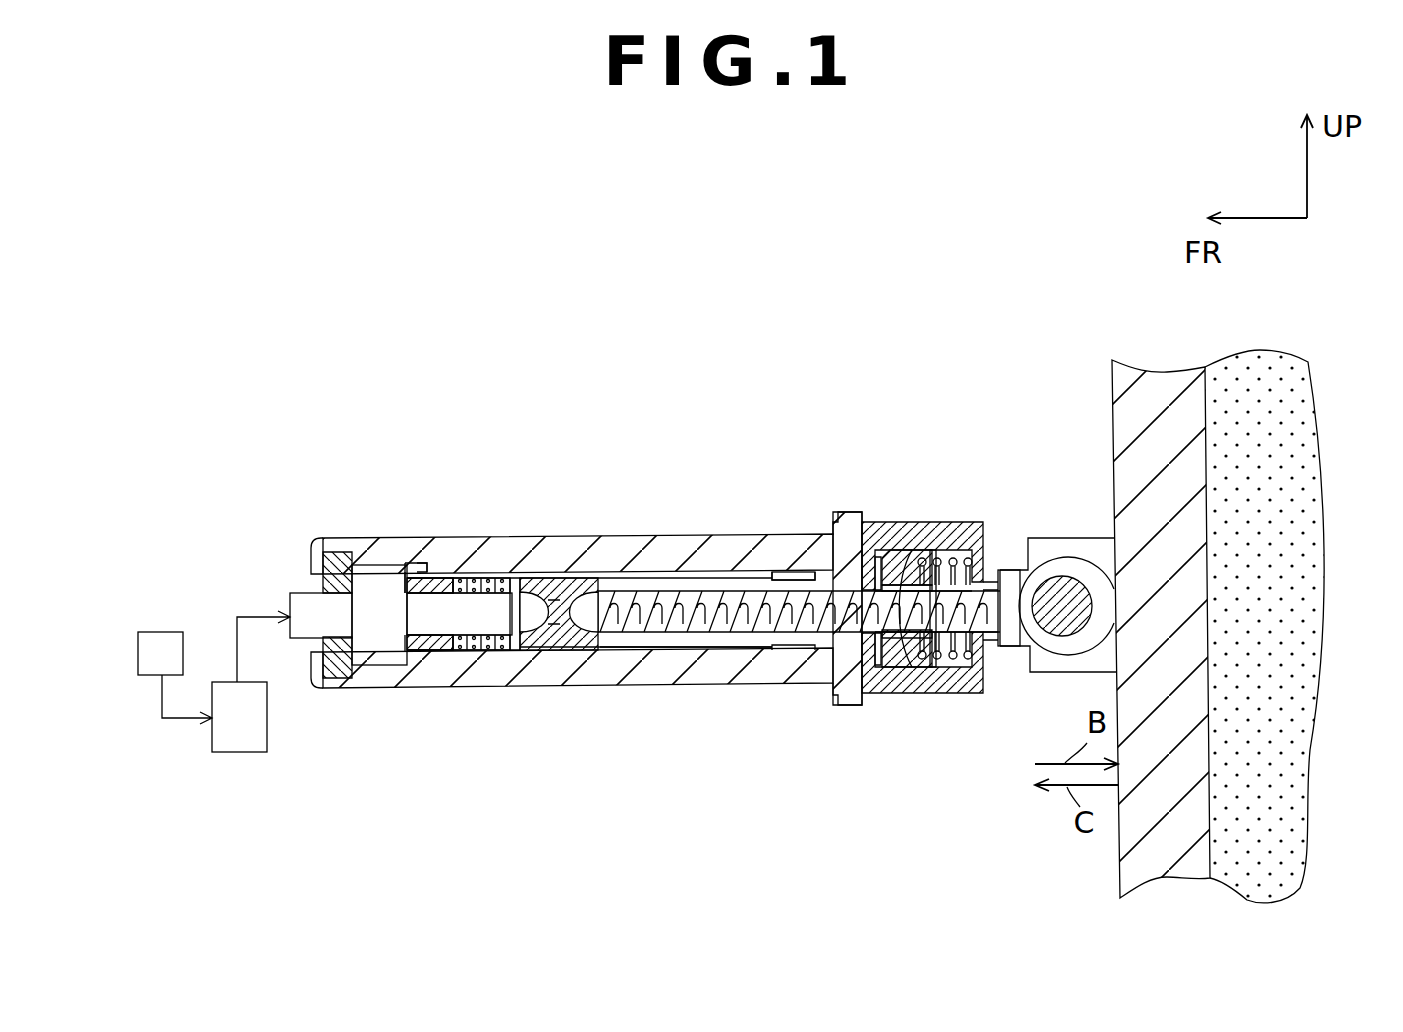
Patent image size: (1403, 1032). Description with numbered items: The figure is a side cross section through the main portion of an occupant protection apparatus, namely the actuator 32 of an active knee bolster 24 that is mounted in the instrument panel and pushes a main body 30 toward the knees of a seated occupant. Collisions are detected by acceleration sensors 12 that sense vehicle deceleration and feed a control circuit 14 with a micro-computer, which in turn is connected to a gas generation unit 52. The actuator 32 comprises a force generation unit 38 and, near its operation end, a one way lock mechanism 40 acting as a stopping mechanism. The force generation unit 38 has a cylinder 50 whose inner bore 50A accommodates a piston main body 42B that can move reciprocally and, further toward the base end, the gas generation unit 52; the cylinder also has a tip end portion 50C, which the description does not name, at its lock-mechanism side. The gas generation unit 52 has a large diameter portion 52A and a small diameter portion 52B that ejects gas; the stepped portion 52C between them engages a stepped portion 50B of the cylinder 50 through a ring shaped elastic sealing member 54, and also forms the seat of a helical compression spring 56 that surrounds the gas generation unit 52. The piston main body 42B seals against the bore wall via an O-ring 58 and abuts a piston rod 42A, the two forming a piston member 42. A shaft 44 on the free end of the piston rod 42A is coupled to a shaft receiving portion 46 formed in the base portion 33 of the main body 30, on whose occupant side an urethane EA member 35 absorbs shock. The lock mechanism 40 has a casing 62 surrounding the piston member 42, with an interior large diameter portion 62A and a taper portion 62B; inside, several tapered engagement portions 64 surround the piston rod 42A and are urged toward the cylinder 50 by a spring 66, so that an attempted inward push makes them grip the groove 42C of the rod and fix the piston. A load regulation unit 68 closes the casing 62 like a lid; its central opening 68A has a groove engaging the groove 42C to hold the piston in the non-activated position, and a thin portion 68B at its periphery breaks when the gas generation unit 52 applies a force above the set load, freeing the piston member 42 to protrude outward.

The acceleration sensor 12 is at (170, 632).
The control circuit 14 is at (238, 752).
The active knee bolster 24 is at (1053, 252).
The main body 30 is at (1142, 340).
The actuator 32 is at (725, 470).
The base portion 33 is at (1127, 847).
The EA member 35 is at (1283, 598).
The force generation unit 38 is at (656, 521).
The one way lock mechanism 40 is at (921, 508).
The piston member 42 is at (766, 635).
The piston rod 42A is at (1006, 650).
The piston main body 42B is at (585, 660).
The groove 42C is at (930, 692).
The shaft 44 is at (1057, 600).
The shaft receiving portion 46 is at (1100, 555).
The cylinder 50 is at (660, 676).
The inner bore 50A is at (692, 648).
The stepped portion 50B is at (426, 567).
The cylinder front end 50C is at (818, 577).
The gas generation unit 52 is at (295, 758).
The large diameter portion 52A is at (352, 688).
The small diameter portion 52B is at (488, 622).
The stepped portion 52C is at (422, 650).
The sealing member 54 is at (400, 577).
The helical compression spring 56 is at (438, 573).
The O-ring 58 is at (560, 573).
The casing 62 is at (868, 700).
The large diameter portion 62A is at (937, 548).
The taper portion 62B is at (903, 550).
The engagement portion 64 is at (893, 692).
The spring 66 is at (952, 692).
The load regulation unit 68 is at (978, 550).
The opening 68A is at (1030, 650).
The thin portion 68B is at (1000, 572).